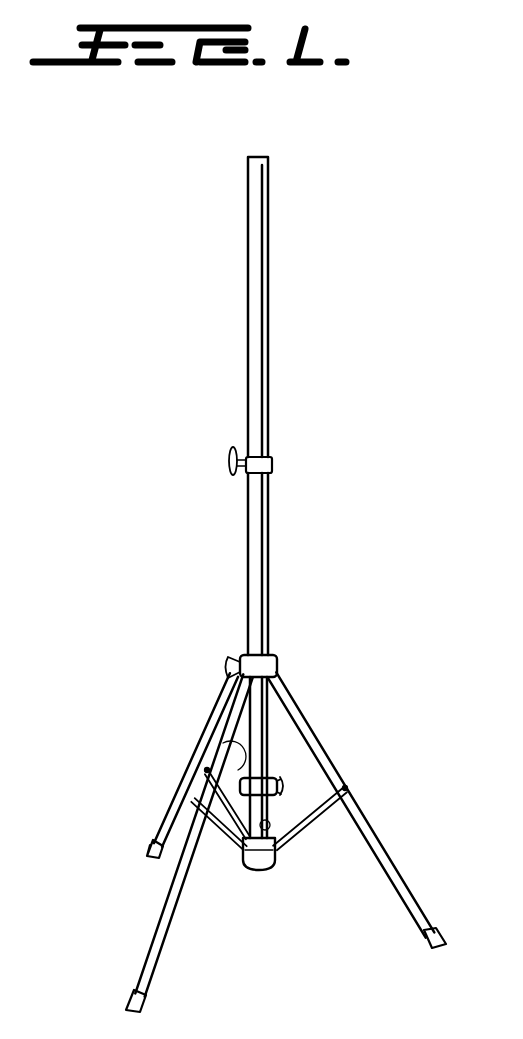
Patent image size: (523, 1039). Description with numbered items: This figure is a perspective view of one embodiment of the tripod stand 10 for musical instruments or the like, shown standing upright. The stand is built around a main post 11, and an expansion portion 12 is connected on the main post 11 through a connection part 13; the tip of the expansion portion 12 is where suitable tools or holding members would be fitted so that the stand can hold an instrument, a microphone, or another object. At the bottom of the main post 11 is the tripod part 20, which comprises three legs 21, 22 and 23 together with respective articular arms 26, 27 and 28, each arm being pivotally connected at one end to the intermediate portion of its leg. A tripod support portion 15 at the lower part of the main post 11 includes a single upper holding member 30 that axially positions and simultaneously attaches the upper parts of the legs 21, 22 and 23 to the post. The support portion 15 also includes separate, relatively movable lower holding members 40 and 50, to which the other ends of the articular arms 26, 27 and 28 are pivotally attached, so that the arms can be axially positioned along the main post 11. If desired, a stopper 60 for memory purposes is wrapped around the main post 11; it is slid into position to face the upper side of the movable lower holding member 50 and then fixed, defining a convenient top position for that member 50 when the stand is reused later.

The tripod stand 10 is at (248, 230).
The main post 11 is at (256, 525).
The expansion portion 12 is at (262, 330).
The connection part 13 is at (232, 450).
The tripod support portion 15 is at (263, 727).
The tripod part 20 is at (200, 736).
The leg 21 is at (158, 925).
The leg 22 is at (387, 840).
The leg 23 is at (180, 788).
The articular arm 26 is at (222, 848).
The articular arm 27 is at (313, 827).
The articular arm 28 is at (220, 713).
The upper holding member 30 is at (268, 656).
The lower holding member 40 is at (260, 872).
The lower holding member 50 is at (270, 820).
The stopper 60 is at (275, 778).